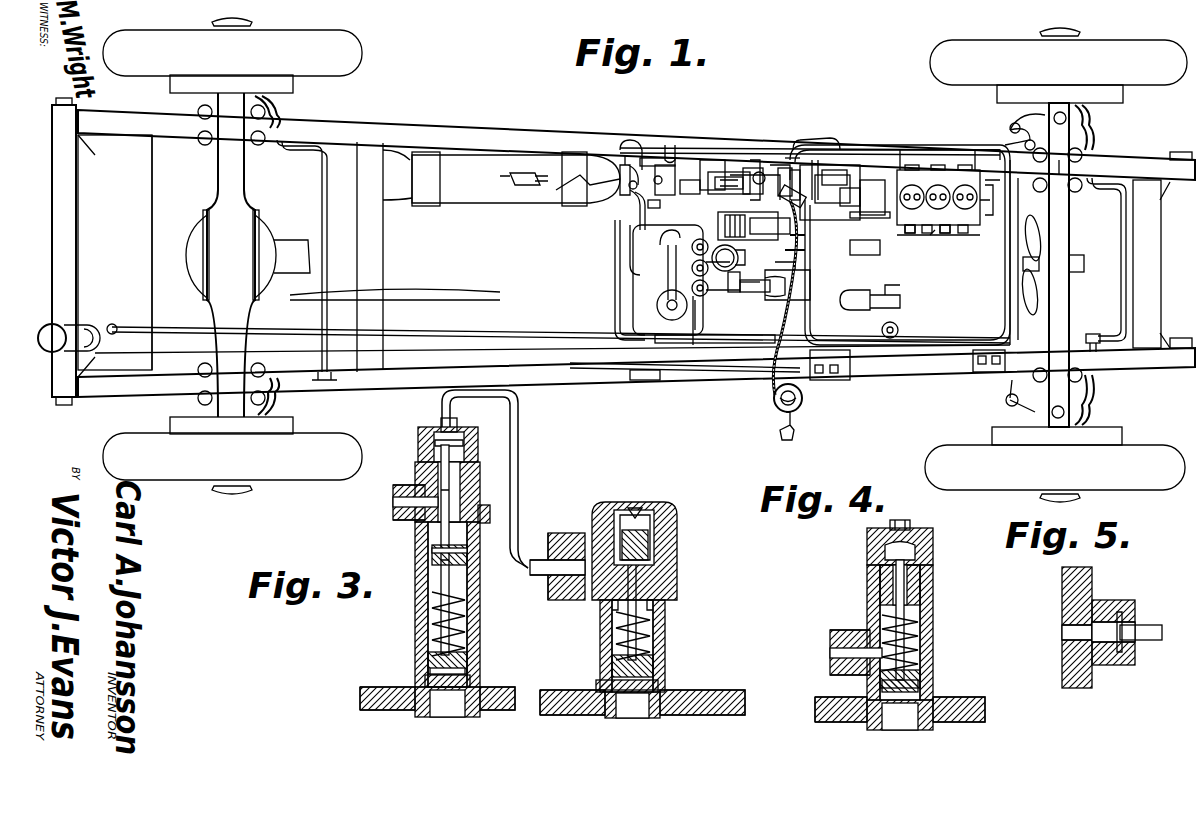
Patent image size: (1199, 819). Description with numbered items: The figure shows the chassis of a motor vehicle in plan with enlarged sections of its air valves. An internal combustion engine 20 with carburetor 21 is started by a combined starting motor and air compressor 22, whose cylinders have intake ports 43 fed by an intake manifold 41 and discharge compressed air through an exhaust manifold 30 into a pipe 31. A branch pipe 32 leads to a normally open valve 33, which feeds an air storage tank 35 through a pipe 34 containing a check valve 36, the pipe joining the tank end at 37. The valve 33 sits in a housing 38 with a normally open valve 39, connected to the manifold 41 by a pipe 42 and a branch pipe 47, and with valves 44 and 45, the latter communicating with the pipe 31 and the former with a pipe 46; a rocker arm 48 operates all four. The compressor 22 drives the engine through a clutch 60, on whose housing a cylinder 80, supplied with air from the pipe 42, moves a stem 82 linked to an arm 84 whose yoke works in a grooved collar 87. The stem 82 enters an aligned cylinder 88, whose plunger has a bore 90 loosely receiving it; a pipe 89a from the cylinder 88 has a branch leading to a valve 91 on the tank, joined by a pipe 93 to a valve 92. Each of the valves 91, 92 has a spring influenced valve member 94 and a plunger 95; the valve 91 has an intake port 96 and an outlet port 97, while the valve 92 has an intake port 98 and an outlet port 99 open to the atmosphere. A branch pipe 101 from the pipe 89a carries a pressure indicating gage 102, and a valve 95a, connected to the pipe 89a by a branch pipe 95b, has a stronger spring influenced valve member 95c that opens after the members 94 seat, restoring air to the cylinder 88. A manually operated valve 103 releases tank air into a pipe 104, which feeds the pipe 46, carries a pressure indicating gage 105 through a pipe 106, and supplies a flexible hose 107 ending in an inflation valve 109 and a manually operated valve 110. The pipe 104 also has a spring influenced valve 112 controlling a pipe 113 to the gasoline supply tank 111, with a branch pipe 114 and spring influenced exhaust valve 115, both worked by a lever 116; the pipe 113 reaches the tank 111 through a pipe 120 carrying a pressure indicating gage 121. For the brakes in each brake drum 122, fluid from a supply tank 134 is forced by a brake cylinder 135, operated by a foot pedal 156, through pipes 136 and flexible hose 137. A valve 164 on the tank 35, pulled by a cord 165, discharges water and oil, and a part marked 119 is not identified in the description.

In FIG. 1, the internal combustion engine 20 is at (958, 305).
In FIG. 1, the carburetor 21 is at (868, 290).
In FIG. 1, the combined starting motor and air compressor 22 is at (945, 170).
In FIG. 1, the exhaust manifold 30 is at (935, 232).
In FIG. 1, the pipe 31 is at (990, 220).
In FIG. 1, the branch pipe 32 is at (798, 168).
In FIG. 1, the normally open valve 33 is at (712, 160).
In FIG. 1, the pipe 34 is at (755, 178).
In FIG. 1, the air storage tank 35 is at (483, 160).
In FIG. 3, the air storage tank 35 is at (372, 676).
In FIG. 4, the air storage tank 35 is at (835, 722).
In FIG. 5, the air storage tank 35 is at (1062, 584).
In FIG. 1, the check valve 36 is at (652, 262).
In FIG. 1, the tank connection 37 is at (650, 205).
In FIG. 5, the tank connection 37 is at (1120, 612).
In FIG. 1, the valve housing 38 is at (780, 165).
In FIG. 1, the normally open valve 39 is at (690, 178).
In FIG. 1, the intake manifold 41 is at (935, 238).
In FIG. 1, the pipe 42 is at (840, 168).
In FIG. 1, the intake ports 43 is at (905, 233).
In FIG. 1, the valve 44 is at (800, 237).
In FIG. 1, the valve 45 is at (788, 166).
In FIG. 1, the pipe 46 is at (800, 252).
In FIG. 1, the branch pipe 47 is at (665, 300).
In FIG. 1, the rocker arm 48 is at (752, 165).
In FIG. 1, the clutch 60 is at (835, 172).
In FIG. 1, the cylinder 80 is at (818, 165).
In FIG. 1, the stem 82 is at (850, 188).
In FIG. 1, the arm 84 is at (875, 178).
In FIG. 1, the grooved collar 87 is at (815, 140).
In FIG. 1, the cylinder 88 is at (790, 150).
In FIG. 1, the pipe 89a is at (738, 172).
In FIG. 1, the bore 90 is at (637, 140).
In FIG. 1, the valve 91 is at (625, 150).
In FIG. 3, the valve 91 is at (415, 624).
In FIG. 1, the valve 92 is at (660, 165).
In FIG. 3, the valve 92 is at (600, 640).
In FIG. 1, the pipe 93 is at (635, 195).
In FIG. 3, the pipe 93 is at (518, 488).
In FIG. 3, the spring influenced valve member 94 is at (440, 552).
In FIG. 3, the plunger 95 is at (480, 660).
In FIG. 1, the valve 95a is at (640, 235).
In FIG. 4, the valve 95a is at (933, 580).
In FIG. 1, the branch pipe 95b is at (670, 145).
In FIG. 4, the branch pipe 95b is at (830, 645).
In FIG. 4, the spring influenced valve member 95c is at (915, 686).
In FIG. 3, the intake port 96 is at (385, 502).
In FIG. 3, the outlet port 97 is at (440, 428).
In FIG. 3, the intake port 98 is at (555, 585).
In FIG. 3, the outlet port 99 is at (640, 510).
In FIG. 1, the branch pipe 101 is at (707, 329).
In FIG. 1, the pressure indicating gage 102 is at (700, 300).
In FIG. 1, the manually operated valve 103 is at (657, 156).
In FIG. 1, the pipe 104 is at (735, 170).
In FIG. 1, the pressure indicating gage 105 is at (625, 372).
In FIG. 1, the pipe 106 is at (610, 260).
In FIG. 1, the flexible hose 107 is at (775, 392).
In FIG. 1, the valve 109 is at (795, 438).
In FIG. 1, the manually operated valve 110 is at (802, 418).
In FIG. 1, the gasoline supply tank 111 is at (140, 182).
In FIG. 1, the spring influenced valve 112 is at (748, 292).
In FIG. 1, the pipe 113 is at (725, 300).
In FIG. 1, the branch pipe 114 is at (735, 305).
In FIG. 1, the spring influenced exhaust valve 115 is at (907, 349).
In FIG. 1, the lever 116 is at (735, 270).
In FIG. 1, the pipe 119 is at (660, 310).
In FIG. 1, the pipe 120 is at (530, 326).
In FIG. 1, the pressure indicating gage 121 is at (690, 300).
In FIG. 1, the brake drum 122 is at (285, 78).
In FIG. 1, the supply tank 134 is at (633, 300).
In FIG. 1, the brake cylinder 135 is at (738, 295).
In FIG. 1, the pipes 136 is at (375, 353).
In FIG. 1, the flexible hose 137 is at (285, 110).
In FIG. 1, the foot pedal 156 is at (820, 268).
In FIG. 1, the valve 164 is at (525, 165).
In FIG. 1, the cord 165 is at (560, 188).